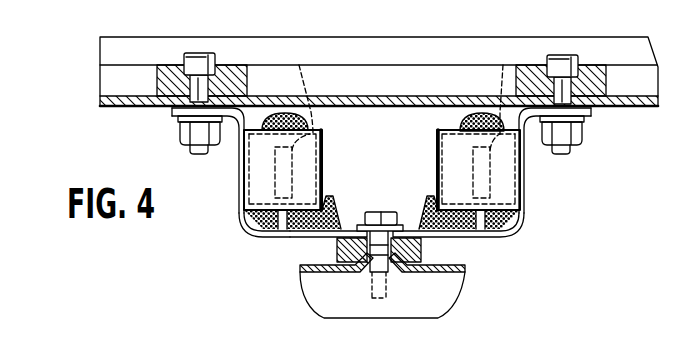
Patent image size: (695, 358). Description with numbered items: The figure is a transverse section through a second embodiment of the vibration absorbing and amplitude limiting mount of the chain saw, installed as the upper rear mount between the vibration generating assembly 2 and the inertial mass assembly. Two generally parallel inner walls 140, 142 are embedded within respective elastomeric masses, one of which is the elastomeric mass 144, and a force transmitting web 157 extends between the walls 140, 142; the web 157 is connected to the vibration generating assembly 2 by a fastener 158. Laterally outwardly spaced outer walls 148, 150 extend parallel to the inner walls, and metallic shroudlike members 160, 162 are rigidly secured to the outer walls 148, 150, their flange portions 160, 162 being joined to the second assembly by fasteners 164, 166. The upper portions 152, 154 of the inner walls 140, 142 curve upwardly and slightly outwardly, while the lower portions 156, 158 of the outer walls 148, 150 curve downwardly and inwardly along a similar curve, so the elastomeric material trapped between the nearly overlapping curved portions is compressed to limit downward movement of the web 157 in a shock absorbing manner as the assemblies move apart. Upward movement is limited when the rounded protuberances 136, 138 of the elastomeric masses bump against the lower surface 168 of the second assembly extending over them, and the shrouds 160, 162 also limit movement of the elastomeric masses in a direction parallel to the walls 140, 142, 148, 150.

The vibration generating assembly 2 is at (304, 270).
The protuberance 136 is at (284, 114).
The protuberance 138 is at (480, 116).
The parallel extending wall 140 is at (249, 201).
The parallel extending wall 142 is at (522, 203).
The elastomeric mass 144 is at (268, 238).
The outer wall 148 is at (247, 173).
The outer wall 150 is at (521, 177).
The upper portion 152 is at (298, 89).
The upper portion 154 is at (502, 89).
The lower portion 156 is at (247, 224).
The force transmitting web 157 is at (344, 229).
The lower portion 158 is at (518, 222).
The metallic shroudlike member 160 is at (172, 111).
The metallic shroudlike member 162 is at (591, 112).
The fastener 164 is at (186, 143).
The fastener 166 is at (580, 146).
The lower surface 168 is at (394, 106).